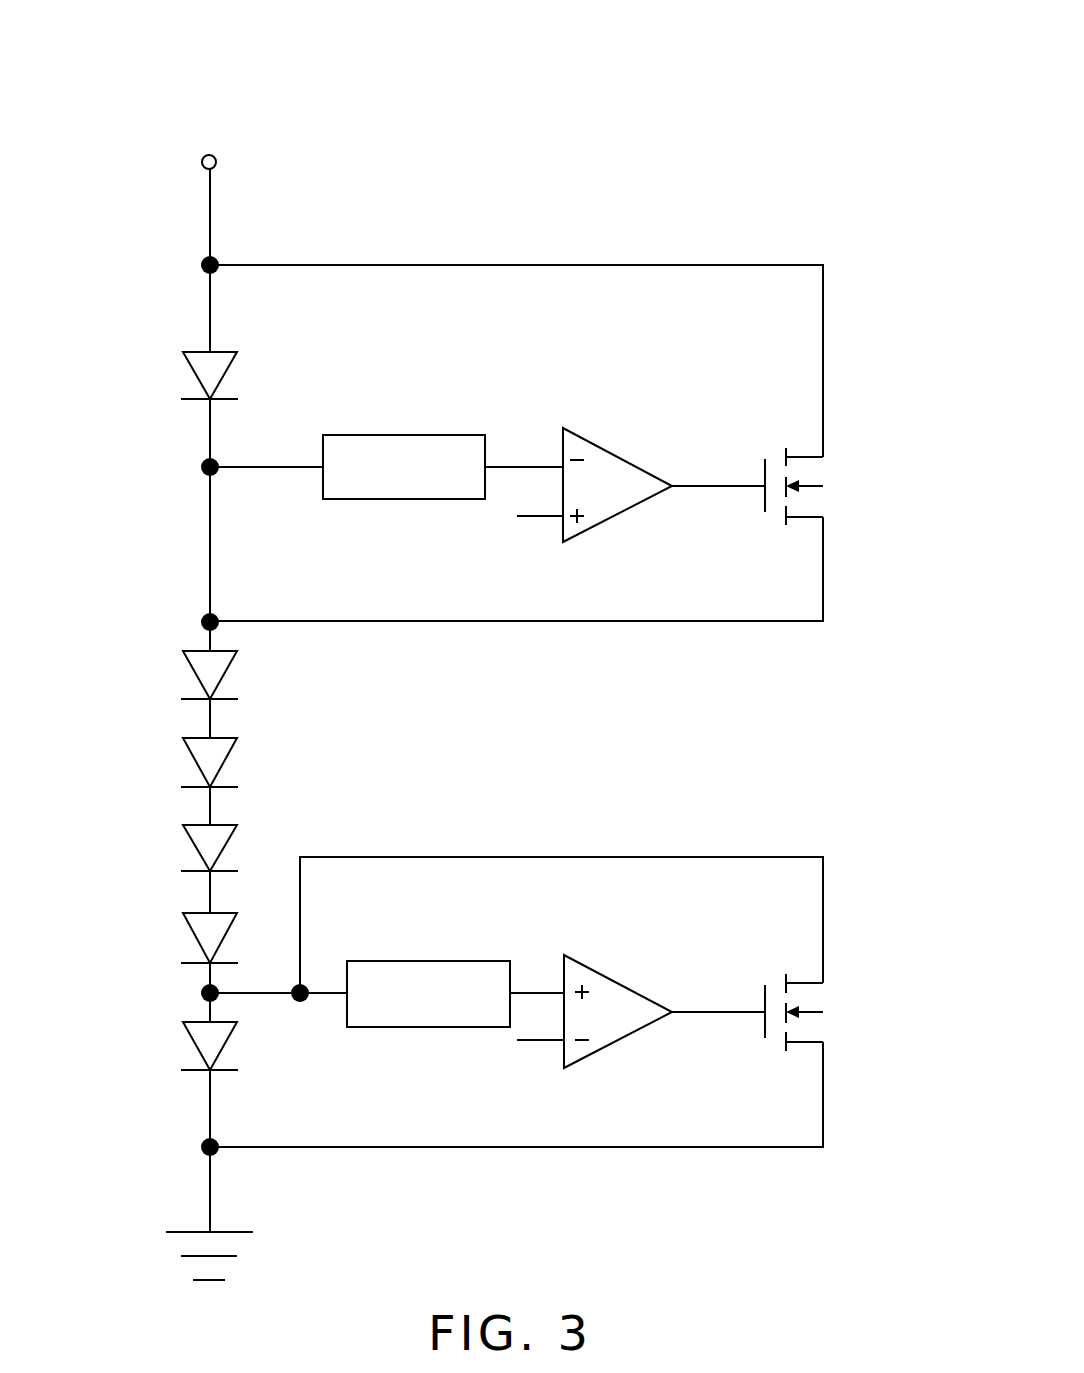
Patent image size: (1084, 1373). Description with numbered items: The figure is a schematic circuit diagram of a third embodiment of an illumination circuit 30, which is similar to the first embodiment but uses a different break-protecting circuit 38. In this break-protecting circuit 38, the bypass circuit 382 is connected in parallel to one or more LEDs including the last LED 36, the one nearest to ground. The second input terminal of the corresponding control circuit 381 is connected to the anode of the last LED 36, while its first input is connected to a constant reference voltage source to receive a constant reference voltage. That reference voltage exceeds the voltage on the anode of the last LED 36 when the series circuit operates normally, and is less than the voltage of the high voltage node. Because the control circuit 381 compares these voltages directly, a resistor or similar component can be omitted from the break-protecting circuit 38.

The illumination circuit 30 is at (494, 36).
The last LED 36 is at (198, 1045).
The break-protecting circuit 38 is at (680, 830).
The control circuit 381 is at (611, 979).
The bypass circuit 382 is at (816, 1010).